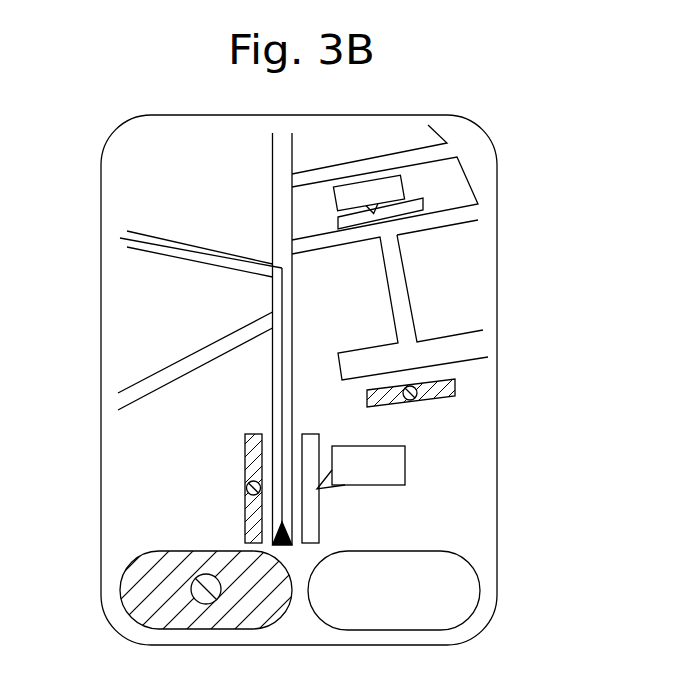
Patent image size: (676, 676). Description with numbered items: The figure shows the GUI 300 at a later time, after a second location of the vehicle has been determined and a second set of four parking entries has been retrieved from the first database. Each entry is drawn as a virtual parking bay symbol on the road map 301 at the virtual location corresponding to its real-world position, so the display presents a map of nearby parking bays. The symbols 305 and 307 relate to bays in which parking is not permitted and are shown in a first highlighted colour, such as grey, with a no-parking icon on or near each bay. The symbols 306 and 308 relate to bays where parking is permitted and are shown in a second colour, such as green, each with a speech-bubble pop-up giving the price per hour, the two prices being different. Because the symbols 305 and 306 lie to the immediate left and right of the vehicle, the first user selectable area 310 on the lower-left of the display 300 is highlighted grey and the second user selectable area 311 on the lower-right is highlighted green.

The GUI 300 is at (572, 147).
The road map 301 is at (178, 165).
The symbol 305 is at (245, 465).
The symbol 306 is at (319, 512).
The symbol 307 is at (447, 398).
The symbol 308 is at (420, 196).
The first user selectable area 310 is at (120, 595).
The second user selectable area 311 is at (480, 581).